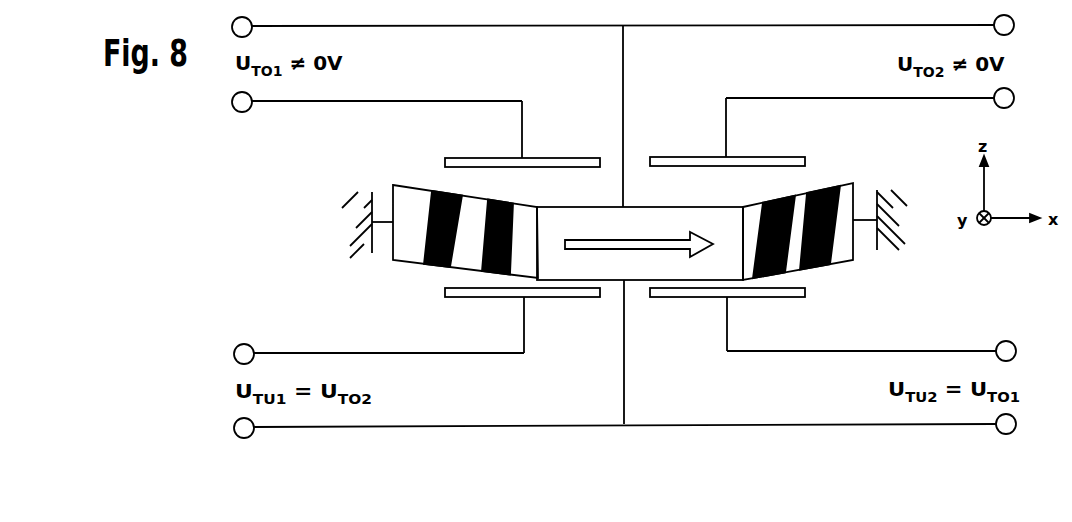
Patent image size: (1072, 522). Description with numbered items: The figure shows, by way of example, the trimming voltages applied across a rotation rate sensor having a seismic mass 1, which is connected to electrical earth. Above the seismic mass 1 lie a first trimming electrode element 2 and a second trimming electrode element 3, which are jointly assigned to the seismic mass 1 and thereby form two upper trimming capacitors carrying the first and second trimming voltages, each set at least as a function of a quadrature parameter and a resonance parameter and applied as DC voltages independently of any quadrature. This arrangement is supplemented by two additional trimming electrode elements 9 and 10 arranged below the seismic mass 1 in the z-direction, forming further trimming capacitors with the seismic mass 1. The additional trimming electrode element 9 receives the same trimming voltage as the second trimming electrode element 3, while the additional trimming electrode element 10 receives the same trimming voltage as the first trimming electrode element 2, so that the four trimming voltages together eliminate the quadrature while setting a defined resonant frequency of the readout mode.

The seismic mass 1 is at (610, 275).
The first trimming electrode element 2 is at (470, 160).
The second trimming electrode element 3 is at (772, 160).
The additional trimming electrode element 9 is at (470, 297).
The additional trimming electrode element 10 is at (767, 297).